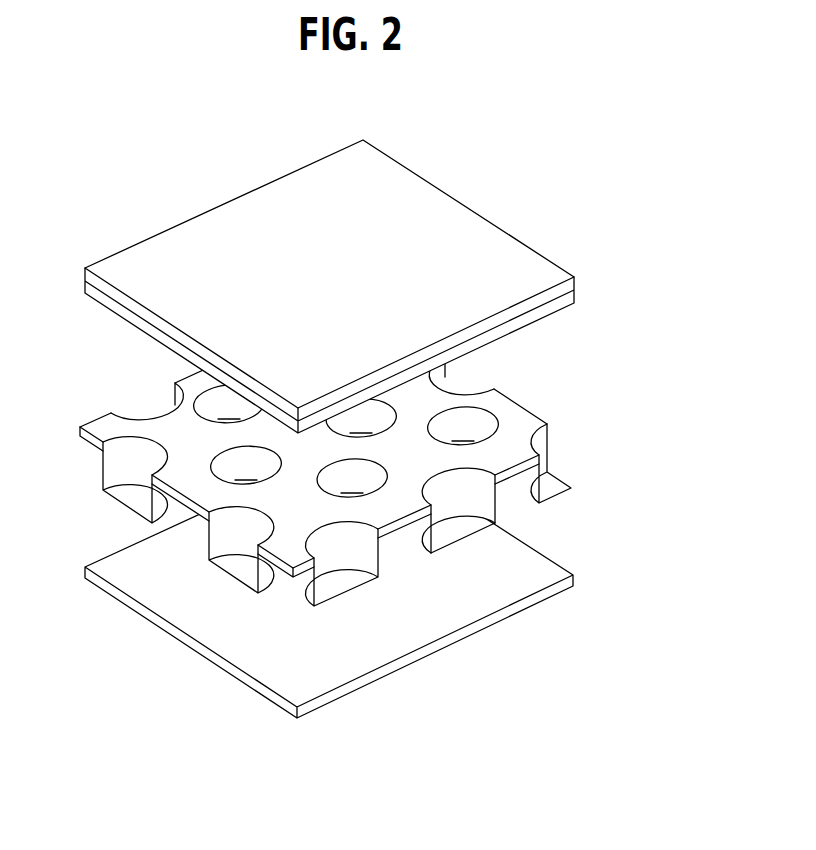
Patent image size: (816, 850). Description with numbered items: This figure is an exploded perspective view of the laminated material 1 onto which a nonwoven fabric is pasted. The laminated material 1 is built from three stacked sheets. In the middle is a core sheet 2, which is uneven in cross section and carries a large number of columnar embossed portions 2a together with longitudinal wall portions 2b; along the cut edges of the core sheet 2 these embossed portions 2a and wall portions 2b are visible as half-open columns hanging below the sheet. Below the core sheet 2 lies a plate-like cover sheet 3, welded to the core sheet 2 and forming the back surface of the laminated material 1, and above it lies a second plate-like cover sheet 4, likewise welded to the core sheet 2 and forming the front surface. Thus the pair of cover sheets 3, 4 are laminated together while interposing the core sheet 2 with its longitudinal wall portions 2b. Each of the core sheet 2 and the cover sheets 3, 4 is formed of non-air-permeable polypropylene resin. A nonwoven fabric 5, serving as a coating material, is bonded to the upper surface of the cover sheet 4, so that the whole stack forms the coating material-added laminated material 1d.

The laminated material 1 is at (396, 391).
The coating material-added laminated material 1d is at (371, 249).
The core sheet 2 is at (360, 489).
The columnar embossed portion 2a is at (458, 533).
The longitudinal wall portion 2b is at (518, 574).
The plate-like cover sheet 3 is at (575, 580).
The plate-like cover sheet 4 is at (371, 279).
The nonwoven fabric 5 is at (225, 232).